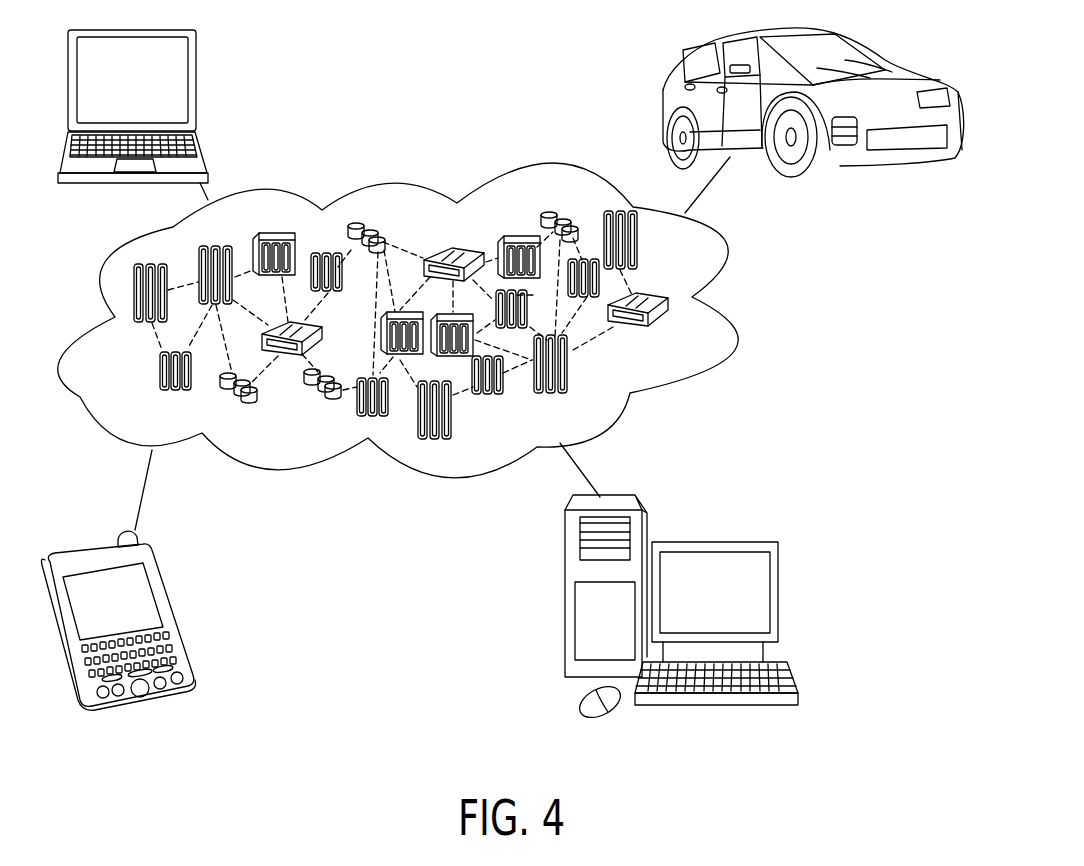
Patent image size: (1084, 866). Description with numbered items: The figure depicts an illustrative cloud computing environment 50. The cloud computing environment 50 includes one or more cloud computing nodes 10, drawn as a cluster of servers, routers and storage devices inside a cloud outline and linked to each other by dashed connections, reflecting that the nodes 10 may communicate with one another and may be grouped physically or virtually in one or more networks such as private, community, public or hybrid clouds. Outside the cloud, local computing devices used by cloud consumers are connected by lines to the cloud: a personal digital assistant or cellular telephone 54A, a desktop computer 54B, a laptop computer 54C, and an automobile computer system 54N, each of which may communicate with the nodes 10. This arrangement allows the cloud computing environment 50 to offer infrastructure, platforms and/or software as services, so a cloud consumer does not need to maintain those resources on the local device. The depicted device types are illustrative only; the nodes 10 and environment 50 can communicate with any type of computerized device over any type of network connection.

The cloud computing nodes 10 is at (682, 348).
The cloud computing environment 50 is at (732, 250).
The personal digital assistant or cellular telephone 54A is at (167, 592).
The desktop computer 54B is at (778, 592).
The laptop computer 54C is at (196, 84).
The automobile computer system 54N is at (843, 50).